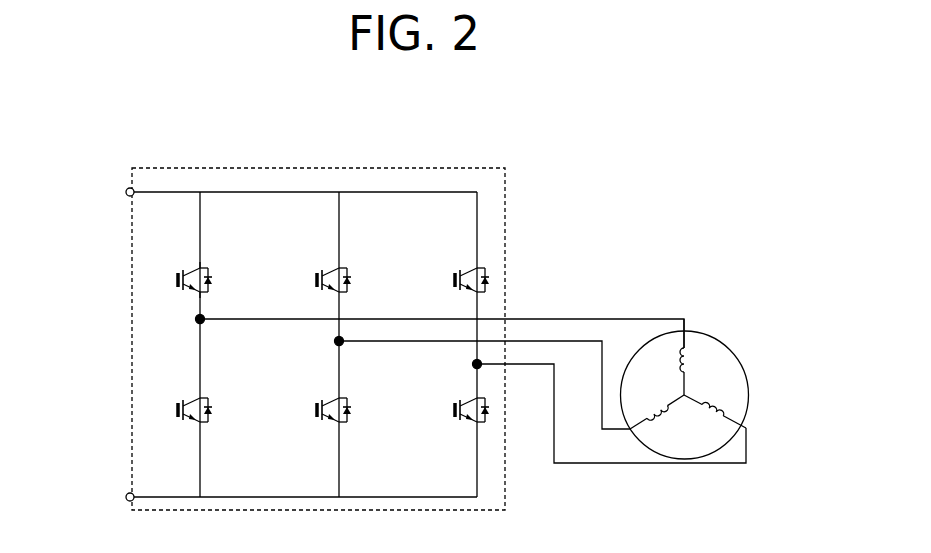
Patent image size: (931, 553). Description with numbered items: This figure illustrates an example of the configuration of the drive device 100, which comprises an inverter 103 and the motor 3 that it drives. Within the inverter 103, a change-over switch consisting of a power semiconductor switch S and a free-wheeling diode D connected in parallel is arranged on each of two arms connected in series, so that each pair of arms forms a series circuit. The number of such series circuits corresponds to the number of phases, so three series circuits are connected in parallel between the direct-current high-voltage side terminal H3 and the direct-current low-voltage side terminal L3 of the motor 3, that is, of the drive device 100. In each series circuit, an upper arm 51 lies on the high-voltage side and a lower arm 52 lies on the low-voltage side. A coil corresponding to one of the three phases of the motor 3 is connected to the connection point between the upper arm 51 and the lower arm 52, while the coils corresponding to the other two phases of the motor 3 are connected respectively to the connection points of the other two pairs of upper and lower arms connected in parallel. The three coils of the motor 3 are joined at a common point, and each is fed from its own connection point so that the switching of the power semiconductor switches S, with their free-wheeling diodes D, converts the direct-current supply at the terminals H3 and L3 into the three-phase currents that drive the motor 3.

The drive device 100 is at (378, 120).
The inverter 103 is at (187, 168).
The direct-current high-voltage side terminal H3 is at (128, 188).
The direct-current low-voltage side terminal L3 is at (128, 493).
The upper arm 51 is at (178, 270).
The lower arm 52 is at (180, 398).
The free-wheeling diode D is at (207, 278).
The power semiconductor switch S is at (181, 291).
The motor 3 is at (714, 337).